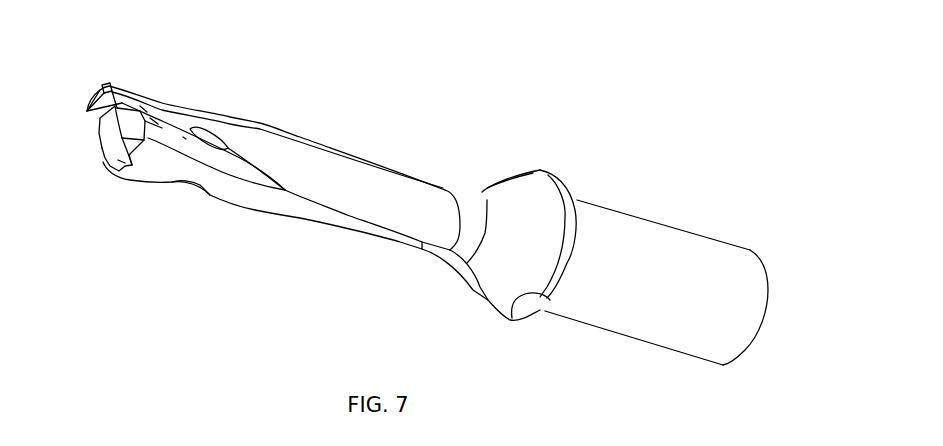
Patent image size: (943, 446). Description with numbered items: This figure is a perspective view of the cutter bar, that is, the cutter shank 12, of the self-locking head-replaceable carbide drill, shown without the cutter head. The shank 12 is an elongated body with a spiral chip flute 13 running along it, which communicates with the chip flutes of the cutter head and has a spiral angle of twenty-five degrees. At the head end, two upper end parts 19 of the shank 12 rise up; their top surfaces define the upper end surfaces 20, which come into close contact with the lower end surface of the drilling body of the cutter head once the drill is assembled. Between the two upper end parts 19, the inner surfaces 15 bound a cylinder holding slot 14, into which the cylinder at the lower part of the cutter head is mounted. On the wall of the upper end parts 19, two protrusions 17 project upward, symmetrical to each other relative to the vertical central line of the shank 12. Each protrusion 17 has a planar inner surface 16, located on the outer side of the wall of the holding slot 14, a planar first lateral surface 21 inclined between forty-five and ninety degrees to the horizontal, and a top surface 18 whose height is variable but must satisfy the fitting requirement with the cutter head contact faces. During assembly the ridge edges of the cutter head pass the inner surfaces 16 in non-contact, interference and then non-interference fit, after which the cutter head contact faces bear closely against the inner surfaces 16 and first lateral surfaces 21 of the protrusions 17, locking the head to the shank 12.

The cutter shank 12 is at (388, 192).
The spiral chip flute 13 is at (182, 137).
The cylinder holding slot 14 is at (155, 122).
The inner surface 15 is at (144, 110).
The inner surface of protrusion 16 is at (117, 100).
The protrusion 17 is at (108, 85).
The top surface of protrusion 18 is at (99, 96).
The upper end part 19 is at (92, 103).
The upper end surface 20 is at (88, 110).
The first lateral surface 21 is at (121, 162).